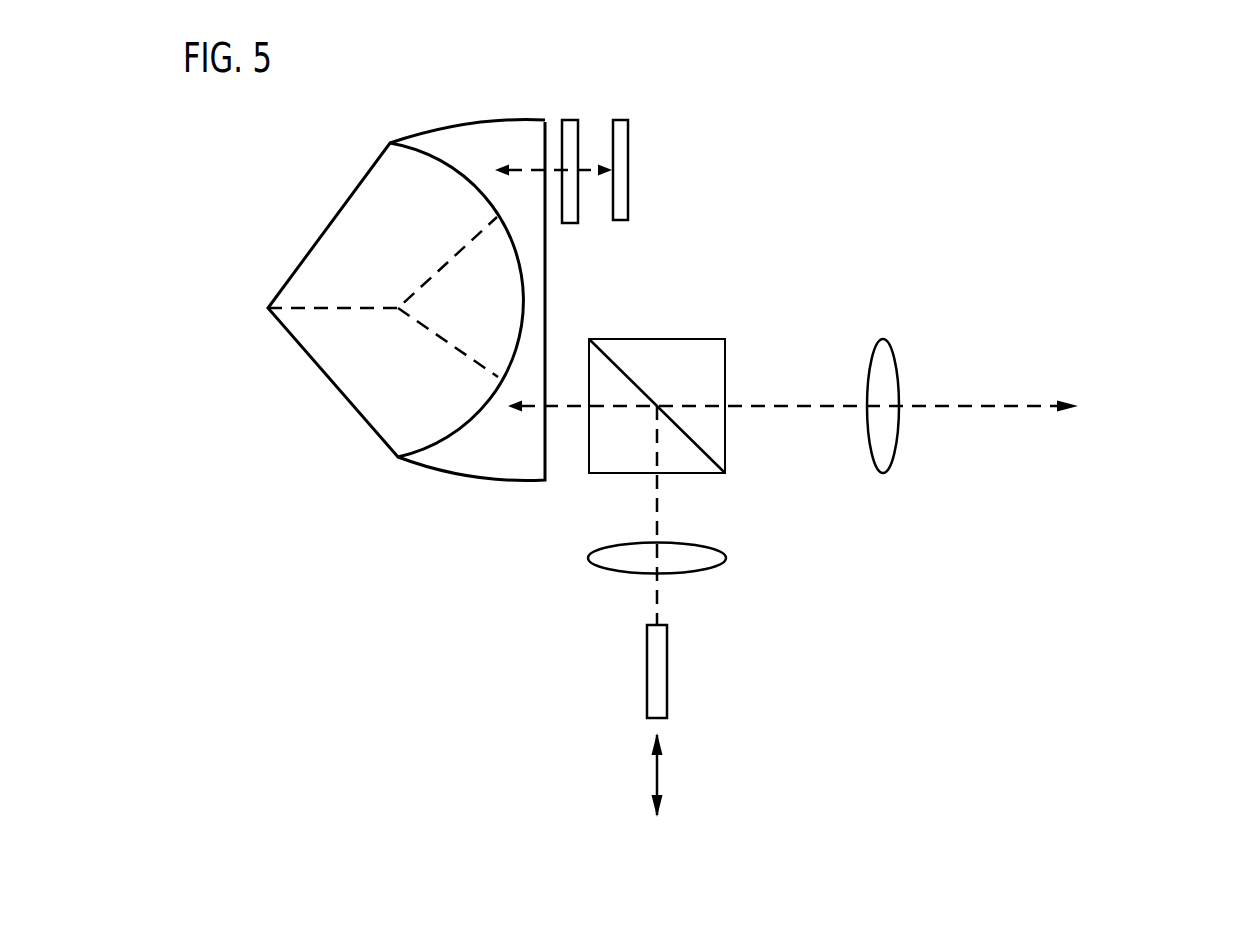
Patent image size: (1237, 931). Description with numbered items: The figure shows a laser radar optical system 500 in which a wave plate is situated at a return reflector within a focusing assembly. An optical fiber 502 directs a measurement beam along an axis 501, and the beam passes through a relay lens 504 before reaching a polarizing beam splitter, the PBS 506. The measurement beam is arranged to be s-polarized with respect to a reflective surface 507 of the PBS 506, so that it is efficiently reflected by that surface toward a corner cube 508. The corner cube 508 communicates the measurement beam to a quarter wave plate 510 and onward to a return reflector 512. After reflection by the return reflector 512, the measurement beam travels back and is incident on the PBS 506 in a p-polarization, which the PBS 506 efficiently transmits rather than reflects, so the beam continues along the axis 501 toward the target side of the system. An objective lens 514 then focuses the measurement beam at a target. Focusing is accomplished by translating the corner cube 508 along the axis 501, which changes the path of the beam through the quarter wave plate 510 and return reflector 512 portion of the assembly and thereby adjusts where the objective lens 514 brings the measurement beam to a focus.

The laser radar optical system 500 is at (876, 144).
The axis 501 is at (552, 172).
The optical fiber 502 is at (668, 660).
The relay lens 504 is at (703, 543).
The PBS 506 is at (677, 338).
The reflective surface 507 is at (698, 443).
The corner cube 508 is at (377, 433).
The quarter wave plate 510 is at (570, 113).
The return reflector 512 is at (628, 148).
The objective lens 514 is at (893, 350).